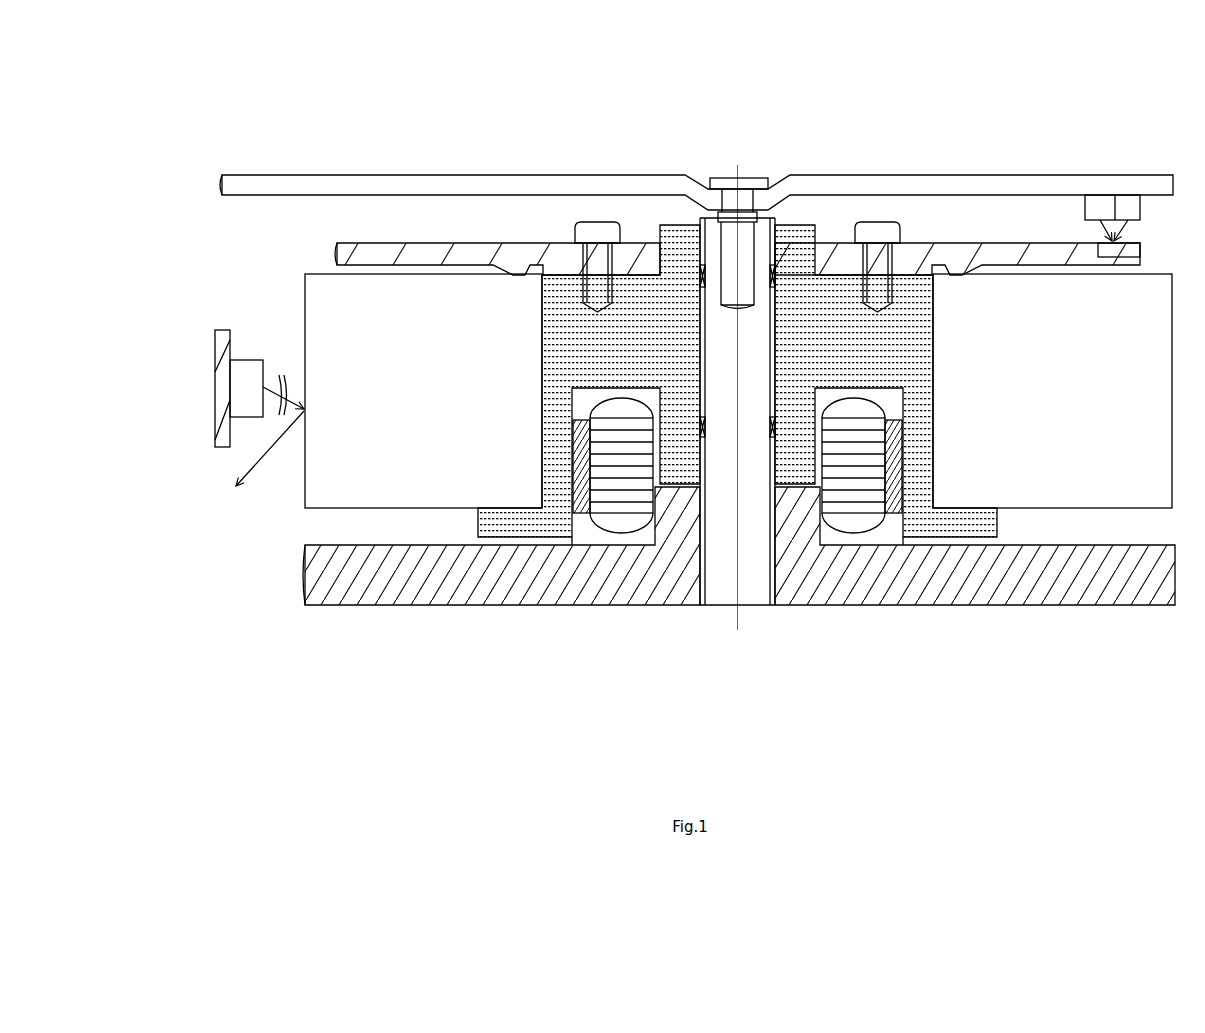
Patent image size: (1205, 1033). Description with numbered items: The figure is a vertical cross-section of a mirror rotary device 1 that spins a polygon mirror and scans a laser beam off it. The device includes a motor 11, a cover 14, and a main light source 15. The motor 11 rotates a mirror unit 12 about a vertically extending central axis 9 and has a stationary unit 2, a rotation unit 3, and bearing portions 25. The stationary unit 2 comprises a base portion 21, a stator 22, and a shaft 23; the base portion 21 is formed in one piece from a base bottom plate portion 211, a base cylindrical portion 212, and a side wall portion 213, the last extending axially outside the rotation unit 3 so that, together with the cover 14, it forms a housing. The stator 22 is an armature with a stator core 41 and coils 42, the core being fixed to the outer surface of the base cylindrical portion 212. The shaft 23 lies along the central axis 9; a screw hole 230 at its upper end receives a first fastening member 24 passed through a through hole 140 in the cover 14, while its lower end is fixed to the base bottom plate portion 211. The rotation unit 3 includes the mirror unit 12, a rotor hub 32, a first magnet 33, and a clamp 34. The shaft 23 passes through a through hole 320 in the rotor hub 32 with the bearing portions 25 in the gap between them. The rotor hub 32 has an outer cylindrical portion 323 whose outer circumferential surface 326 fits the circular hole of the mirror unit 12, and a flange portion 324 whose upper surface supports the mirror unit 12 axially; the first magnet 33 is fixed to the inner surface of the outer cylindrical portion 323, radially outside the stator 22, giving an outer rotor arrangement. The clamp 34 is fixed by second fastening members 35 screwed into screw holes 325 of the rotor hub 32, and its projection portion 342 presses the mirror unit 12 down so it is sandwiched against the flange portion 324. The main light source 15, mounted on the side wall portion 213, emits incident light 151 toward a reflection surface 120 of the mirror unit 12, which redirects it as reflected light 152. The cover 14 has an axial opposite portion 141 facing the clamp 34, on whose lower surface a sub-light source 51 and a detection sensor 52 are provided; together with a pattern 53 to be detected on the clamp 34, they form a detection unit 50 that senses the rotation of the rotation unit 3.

The mirror rotary device 1 is at (505, 143).
The stationary unit 2 is at (574, 618).
The rotation unit 3 is at (706, 400).
The central axis 9 is at (737, 177).
The motor 11 is at (483, 226).
The mirror unit 12 is at (714, 410).
The cover 14 is at (958, 190).
The main light source 15 is at (241, 411).
The base portion 21 is at (852, 560).
The stator 22 is at (624, 560).
The shaft 23 is at (748, 580).
The first fastening member 24 is at (648, 222).
The bearing portions 25 is at (727, 433).
The rotor hub 32 is at (557, 307).
The first magnet 33 is at (912, 540).
The clamp 34 is at (737, 235).
The second fastening member 35 is at (880, 240).
The stator core 41 is at (613, 492).
The coils 42 is at (627, 527).
The detection unit 50 is at (1098, 193).
The sub-light source 51 is at (1085, 212).
The detection sensor 52 is at (1137, 218).
The pattern to be detected 53 is at (1105, 243).
The reflection surfaces 120 is at (305, 292).
The through hole 140 is at (746, 199).
The axial opposite portion 141 is at (1115, 194).
The incident light 151 is at (275, 400).
The reflected light 152 is at (260, 455).
The base bottom plate portion 211 is at (860, 537).
The base cylindrical portion 212 is at (845, 530).
The side wall portion 213 is at (222, 426).
The screw hole 230 is at (699, 262).
The through hole 320 is at (796, 251).
The outer cylindrical portion 323 is at (552, 343).
The flange portion 324 is at (975, 520).
The screw holes 325 is at (882, 289).
The outer circumferential surface 326 is at (542, 440).
The projection portion 342 is at (512, 270).